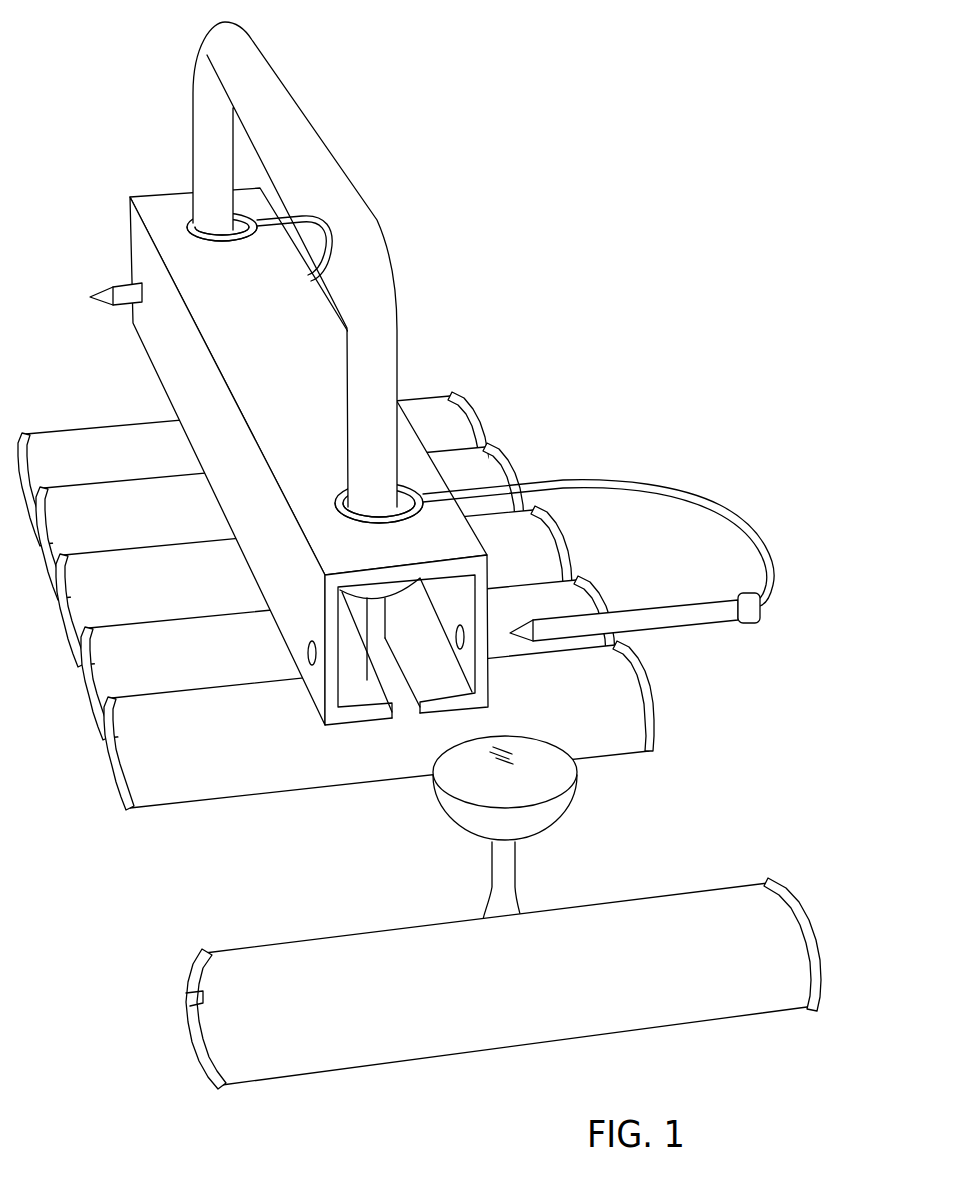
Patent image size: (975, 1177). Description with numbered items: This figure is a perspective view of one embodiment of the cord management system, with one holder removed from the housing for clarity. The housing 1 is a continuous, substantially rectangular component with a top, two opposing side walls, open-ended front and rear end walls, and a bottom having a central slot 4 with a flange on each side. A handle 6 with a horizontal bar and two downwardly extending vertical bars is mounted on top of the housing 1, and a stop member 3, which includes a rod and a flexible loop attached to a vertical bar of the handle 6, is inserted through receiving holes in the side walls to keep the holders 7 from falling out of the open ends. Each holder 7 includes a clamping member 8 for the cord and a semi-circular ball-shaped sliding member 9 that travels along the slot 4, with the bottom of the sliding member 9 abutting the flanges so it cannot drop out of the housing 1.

The housing 1 is at (123, 177).
The stop member 3 is at (717, 628).
The central slot 4 is at (400, 712).
The handle 6 is at (370, 203).
The holder 7 is at (503, 944).
The clamping member 8 is at (267, 935).
The sliding member 9 is at (450, 827).